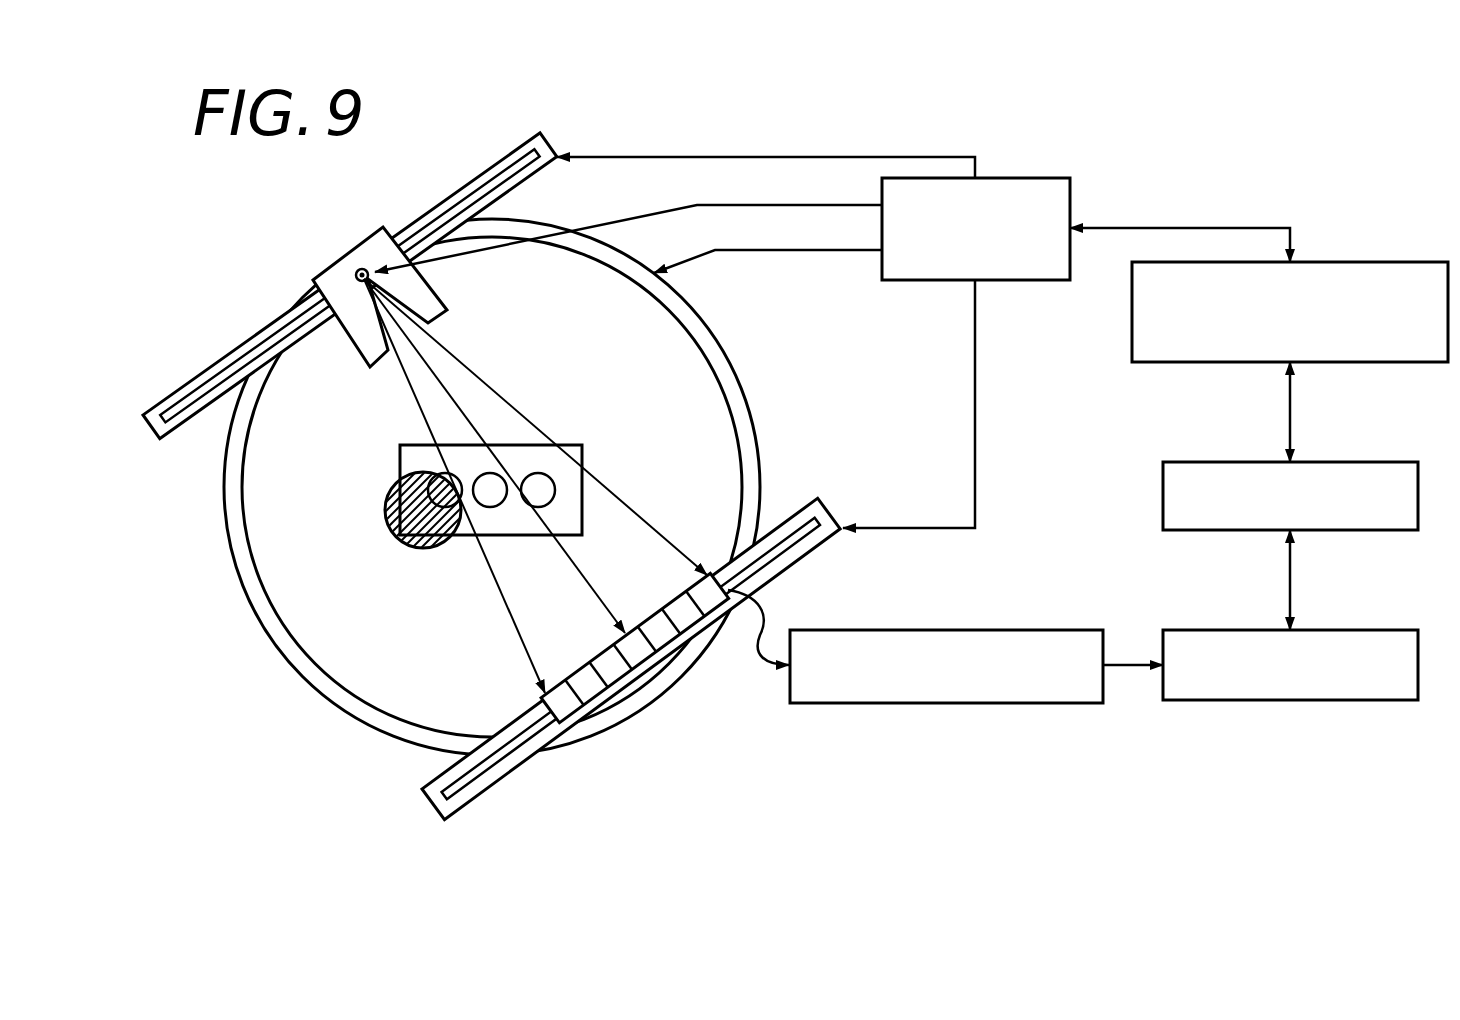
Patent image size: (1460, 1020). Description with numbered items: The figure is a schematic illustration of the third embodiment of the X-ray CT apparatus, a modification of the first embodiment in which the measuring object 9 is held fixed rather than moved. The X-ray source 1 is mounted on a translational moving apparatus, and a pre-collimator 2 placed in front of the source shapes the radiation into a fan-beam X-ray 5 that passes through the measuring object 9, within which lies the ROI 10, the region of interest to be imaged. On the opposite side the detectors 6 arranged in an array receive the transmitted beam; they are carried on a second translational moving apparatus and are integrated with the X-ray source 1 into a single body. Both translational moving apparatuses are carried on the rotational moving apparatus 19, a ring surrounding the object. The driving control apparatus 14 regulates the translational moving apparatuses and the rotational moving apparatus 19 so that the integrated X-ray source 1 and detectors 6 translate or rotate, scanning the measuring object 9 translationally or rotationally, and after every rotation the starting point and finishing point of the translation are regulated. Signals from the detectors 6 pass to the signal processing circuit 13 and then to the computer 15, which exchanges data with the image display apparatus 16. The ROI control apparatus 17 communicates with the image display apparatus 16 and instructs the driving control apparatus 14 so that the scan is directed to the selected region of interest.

The X-ray source 1 is at (357, 276).
The pre-collimator 2 is at (338, 281).
The fan-beam X-ray 5 is at (622, 528).
The detectors arranged in an array 6 is at (578, 712).
The measuring object 9 is at (530, 457).
The ROI in the measuring object 10 is at (430, 525).
The signal processing circuit 13 is at (1040, 630).
The driving control apparatus 14 is at (1076, 192).
The computer 15 is at (1382, 630).
The image display apparatus 16 is at (1375, 462).
The ROI control apparatus 17 is at (1392, 260).
The rotational moving apparatus 19 is at (258, 603).